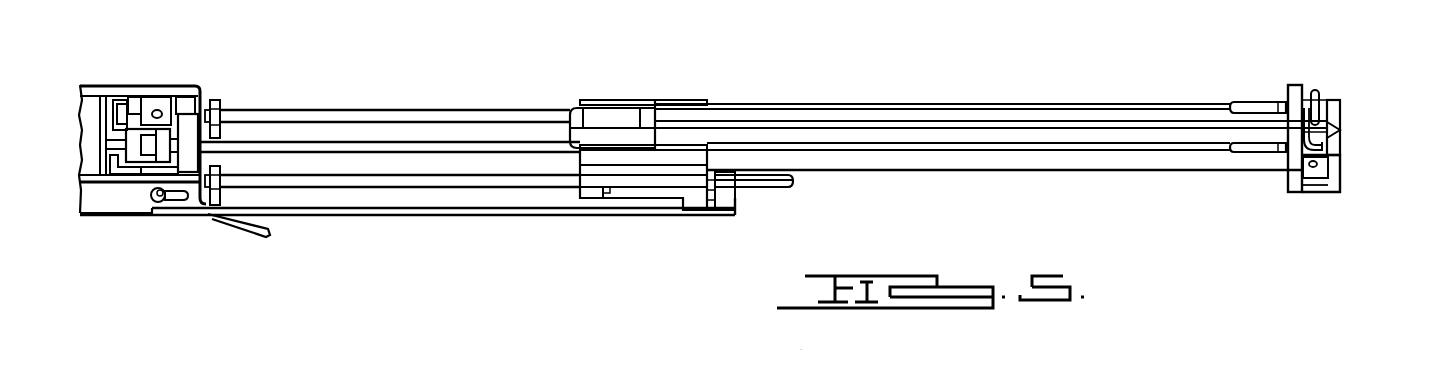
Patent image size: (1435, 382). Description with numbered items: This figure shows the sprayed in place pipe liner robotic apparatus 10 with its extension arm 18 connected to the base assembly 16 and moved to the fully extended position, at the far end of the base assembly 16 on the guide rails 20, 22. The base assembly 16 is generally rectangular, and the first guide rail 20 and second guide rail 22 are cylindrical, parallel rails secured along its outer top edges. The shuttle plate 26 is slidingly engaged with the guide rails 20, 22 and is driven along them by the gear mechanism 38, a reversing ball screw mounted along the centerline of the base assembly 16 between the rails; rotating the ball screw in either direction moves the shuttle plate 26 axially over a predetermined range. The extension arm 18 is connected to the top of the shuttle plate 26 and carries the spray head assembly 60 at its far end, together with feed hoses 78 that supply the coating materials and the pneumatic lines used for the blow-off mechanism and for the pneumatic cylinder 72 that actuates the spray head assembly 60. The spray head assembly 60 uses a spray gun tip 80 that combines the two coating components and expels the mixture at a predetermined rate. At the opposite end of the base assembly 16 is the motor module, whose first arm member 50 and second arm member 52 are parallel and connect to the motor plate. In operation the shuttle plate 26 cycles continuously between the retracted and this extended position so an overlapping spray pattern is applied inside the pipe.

The sprayed in place pipe liner apparatus 10 is at (642, 80).
The base assembly 16 is at (452, 200).
The extension arm 18 is at (992, 155).
The first guide rail 20 is at (328, 111).
The second guide rail 22 is at (356, 183).
The shuttle plate 26 is at (640, 167).
The gear mechanism 38 is at (448, 142).
The first arm member 50 is at (178, 90).
The second arm member 52 is at (130, 205).
The spray head assembly 60 is at (1302, 190).
The pneumatic cylinder 72 is at (605, 112).
The feed hoses 78 is at (1245, 102).
The spray gun tip 80 is at (1342, 128).